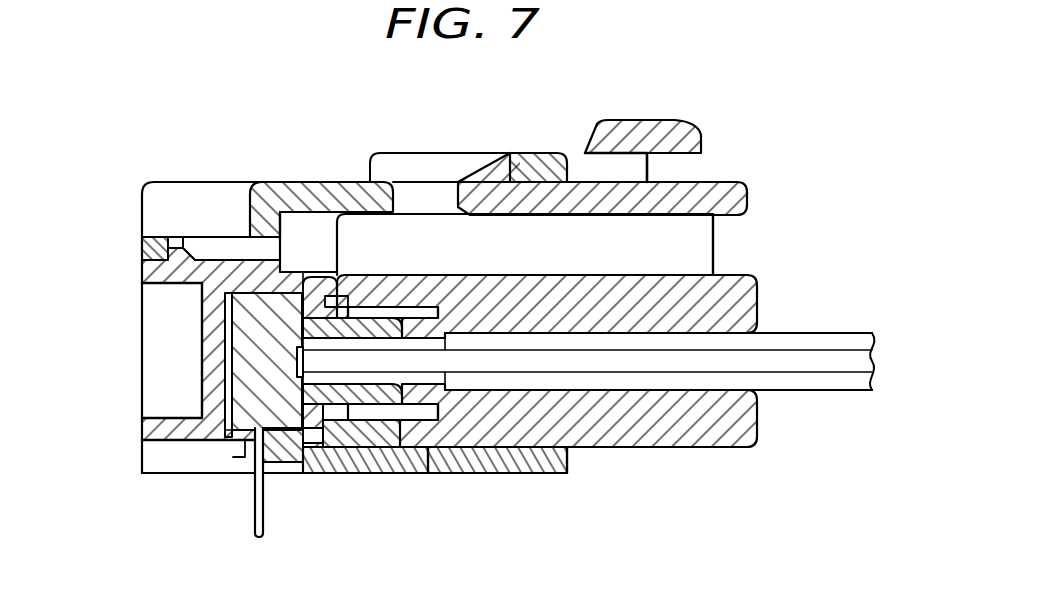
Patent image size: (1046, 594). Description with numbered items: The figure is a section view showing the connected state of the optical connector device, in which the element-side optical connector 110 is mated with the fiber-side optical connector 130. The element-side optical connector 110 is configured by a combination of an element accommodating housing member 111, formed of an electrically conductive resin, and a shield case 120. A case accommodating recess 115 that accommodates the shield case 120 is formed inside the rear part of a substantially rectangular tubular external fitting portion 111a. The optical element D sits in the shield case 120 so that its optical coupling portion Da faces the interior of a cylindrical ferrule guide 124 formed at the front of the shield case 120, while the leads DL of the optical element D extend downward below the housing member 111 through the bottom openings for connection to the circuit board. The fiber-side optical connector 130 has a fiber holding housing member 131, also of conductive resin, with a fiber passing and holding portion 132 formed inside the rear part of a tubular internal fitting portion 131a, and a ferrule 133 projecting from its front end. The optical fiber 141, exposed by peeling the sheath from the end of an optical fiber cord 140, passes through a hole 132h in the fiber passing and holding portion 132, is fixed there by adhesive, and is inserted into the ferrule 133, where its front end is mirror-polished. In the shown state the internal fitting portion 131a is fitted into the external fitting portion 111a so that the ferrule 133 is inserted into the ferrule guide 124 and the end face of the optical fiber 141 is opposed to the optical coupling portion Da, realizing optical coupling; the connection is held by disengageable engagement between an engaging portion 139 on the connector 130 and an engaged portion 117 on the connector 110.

The element-side optical connector 110 is at (326, 118).
The element accommodating housing member 111 is at (284, 181).
The tubular external fitting portion 111a is at (545, 474).
The case accommodating recess 115 is at (174, 257).
The engaged portion 117 is at (544, 152).
The shield case 120 is at (146, 430).
The ferrule guide 124 is at (387, 438).
The fiber-side optical connector 130 is at (747, 148).
The fiber holding housing member 131 is at (683, 448).
The tubular internal fitting portion 131a is at (428, 456).
The fiber passing and holding portion 132 is at (760, 287).
The hole 132h is at (710, 388).
The ferrule 133 is at (320, 476).
The engaging portion 139 is at (482, 165).
The optical fiber cord 140 is at (813, 332).
The optical fiber 141 is at (468, 358).
The optical element D is at (228, 350).
The optical coupling portion Da is at (302, 357).
The leads DL is at (256, 515).